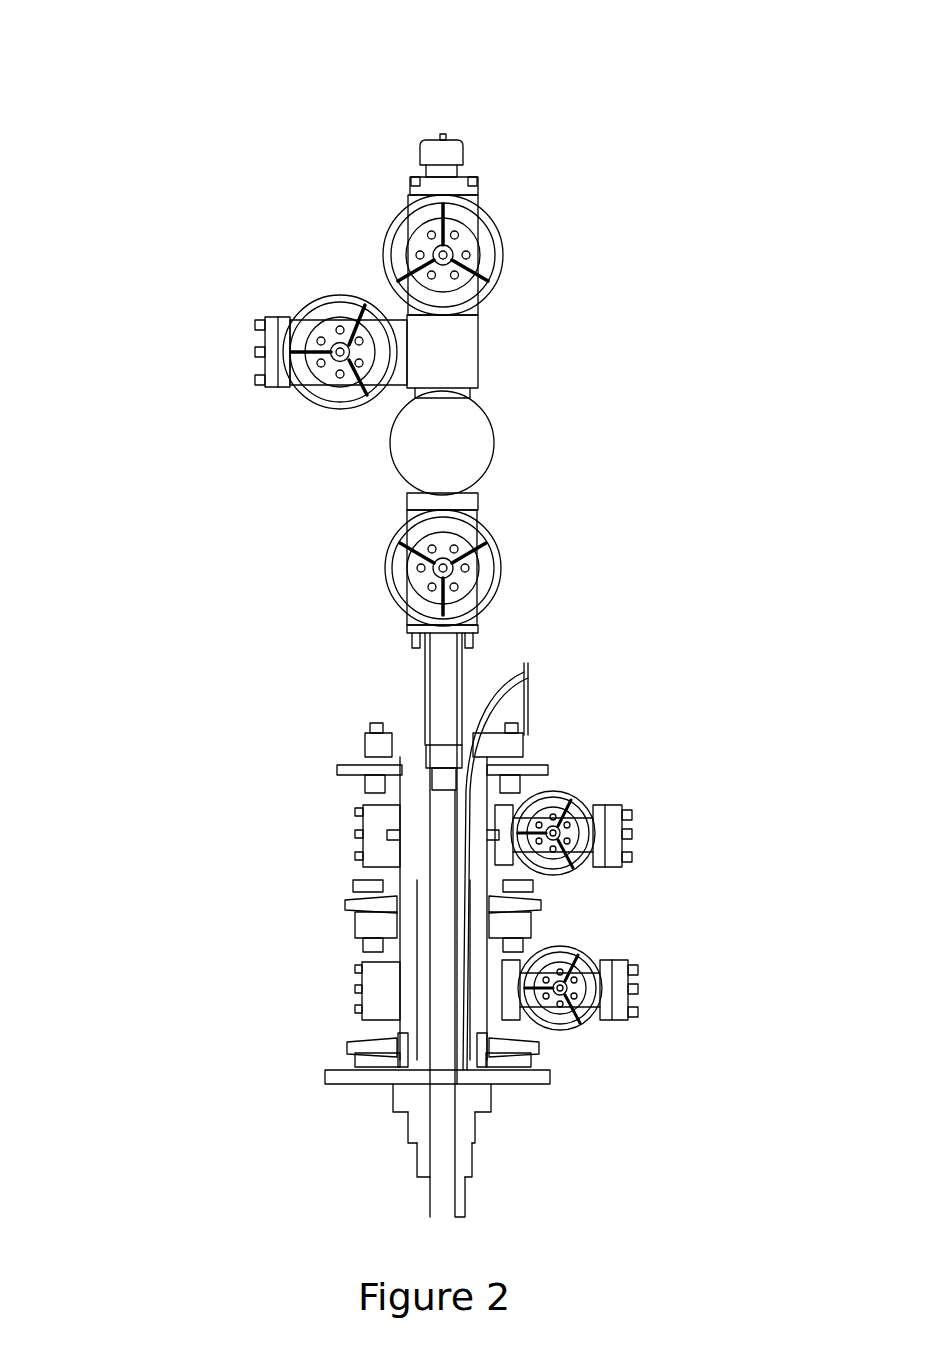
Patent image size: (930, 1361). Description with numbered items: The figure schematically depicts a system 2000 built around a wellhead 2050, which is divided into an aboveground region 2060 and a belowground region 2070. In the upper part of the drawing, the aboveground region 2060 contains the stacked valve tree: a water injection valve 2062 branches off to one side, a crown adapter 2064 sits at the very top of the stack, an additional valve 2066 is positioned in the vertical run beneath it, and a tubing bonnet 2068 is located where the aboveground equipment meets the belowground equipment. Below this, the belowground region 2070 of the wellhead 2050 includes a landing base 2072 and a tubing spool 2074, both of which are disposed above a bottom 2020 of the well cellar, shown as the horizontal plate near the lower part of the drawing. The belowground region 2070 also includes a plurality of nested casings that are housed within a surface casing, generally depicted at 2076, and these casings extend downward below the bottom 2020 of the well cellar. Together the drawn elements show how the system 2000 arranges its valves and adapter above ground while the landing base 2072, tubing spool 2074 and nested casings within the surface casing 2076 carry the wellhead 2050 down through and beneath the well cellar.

The system 2000 is at (196, 70).
The wellhead 2050 is at (676, 640).
The aboveground region 2060 is at (192, 125).
The water injection valve 2062 is at (333, 293).
The crown adapter 2064 is at (450, 140).
The additional valve 2066 is at (500, 556).
The tubing bonnet 2068 is at (529, 705).
The belowground region 2070 is at (192, 745).
The landing base 2072 is at (623, 958).
The tubing spool 2074 is at (617, 805).
The bottom of the well cellar 2020 is at (550, 1078).
The surface casing 2076 is at (494, 1160).